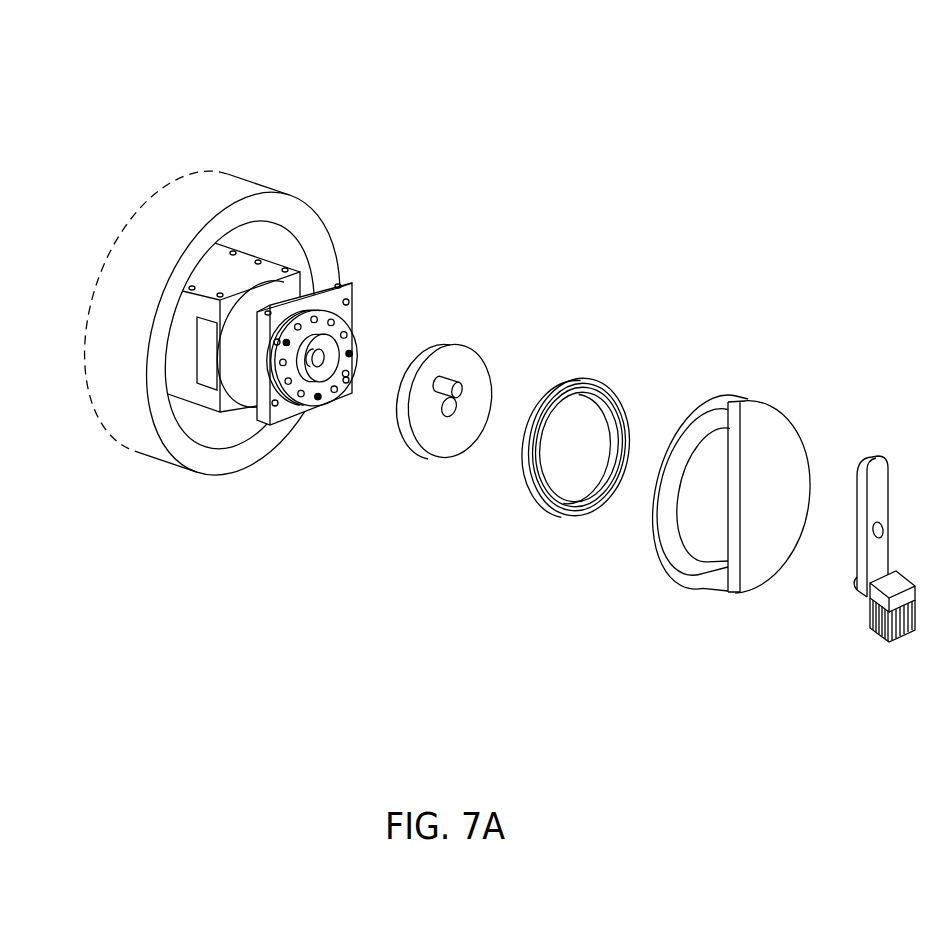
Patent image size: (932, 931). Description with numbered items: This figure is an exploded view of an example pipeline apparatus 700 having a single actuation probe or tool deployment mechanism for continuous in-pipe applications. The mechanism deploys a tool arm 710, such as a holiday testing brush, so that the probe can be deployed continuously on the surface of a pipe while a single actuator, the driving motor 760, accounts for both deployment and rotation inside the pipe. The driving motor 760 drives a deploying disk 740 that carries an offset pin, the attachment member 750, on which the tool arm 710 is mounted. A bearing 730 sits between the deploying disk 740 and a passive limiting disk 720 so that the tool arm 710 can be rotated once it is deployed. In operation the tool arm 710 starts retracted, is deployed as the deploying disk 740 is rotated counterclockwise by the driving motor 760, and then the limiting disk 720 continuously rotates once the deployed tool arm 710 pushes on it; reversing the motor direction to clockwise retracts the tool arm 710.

The pipeline apparatus 700 is at (207, 83).
The tool arm 710 is at (880, 473).
The passive limiting disk 720 is at (705, 585).
The bearing 730 is at (530, 490).
The deploying disk 740 is at (449, 419).
The attachment member 750 is at (445, 383).
The driving motor 760 is at (245, 373).